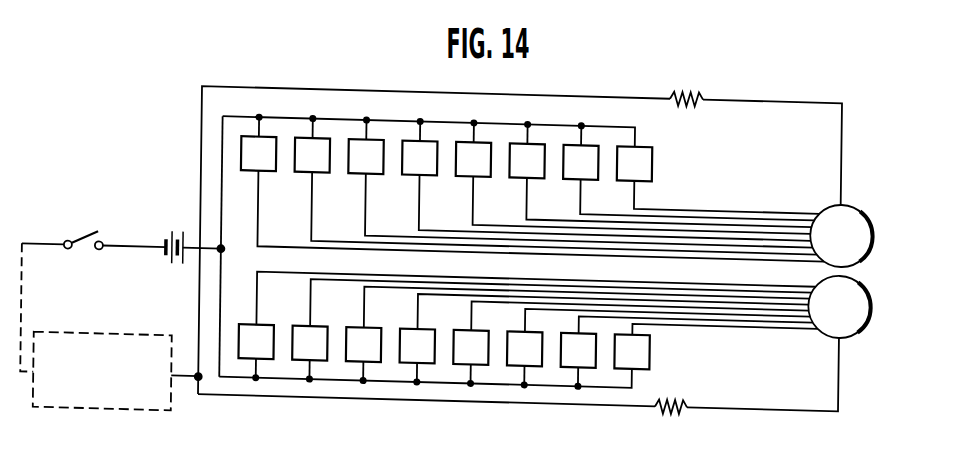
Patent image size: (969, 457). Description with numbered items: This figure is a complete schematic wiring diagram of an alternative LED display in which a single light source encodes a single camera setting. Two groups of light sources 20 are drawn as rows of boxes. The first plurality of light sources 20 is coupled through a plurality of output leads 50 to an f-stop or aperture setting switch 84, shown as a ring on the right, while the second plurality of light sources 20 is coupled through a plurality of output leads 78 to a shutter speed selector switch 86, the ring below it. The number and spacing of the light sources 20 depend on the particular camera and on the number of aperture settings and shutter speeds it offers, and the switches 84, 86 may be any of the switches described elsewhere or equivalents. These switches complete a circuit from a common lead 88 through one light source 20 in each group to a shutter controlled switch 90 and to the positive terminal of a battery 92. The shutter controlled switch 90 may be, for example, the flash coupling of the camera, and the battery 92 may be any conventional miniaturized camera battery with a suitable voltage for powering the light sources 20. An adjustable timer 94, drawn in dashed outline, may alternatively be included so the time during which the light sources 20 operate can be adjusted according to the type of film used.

The light sources 20 is at (305, 178).
The output leads 50 is at (499, 238).
The output leads 78 is at (405, 284).
The f-stop or aperture setting switch 84 is at (868, 243).
The shutter speed selector switch 86 is at (871, 298).
The common lead 88 is at (222, 308).
The shutter controlled switch 90 is at (78, 239).
The battery 92 is at (171, 230).
The adjustable timer 94 is at (136, 341).